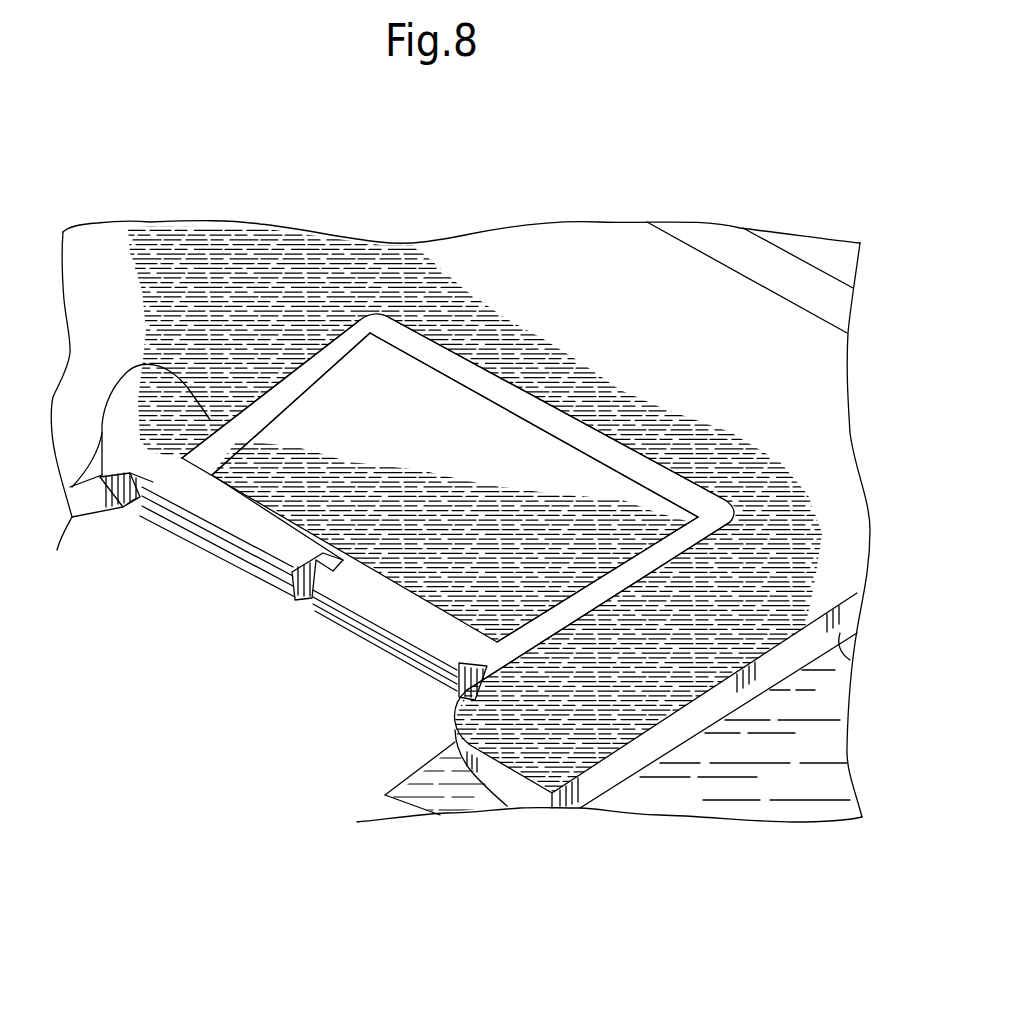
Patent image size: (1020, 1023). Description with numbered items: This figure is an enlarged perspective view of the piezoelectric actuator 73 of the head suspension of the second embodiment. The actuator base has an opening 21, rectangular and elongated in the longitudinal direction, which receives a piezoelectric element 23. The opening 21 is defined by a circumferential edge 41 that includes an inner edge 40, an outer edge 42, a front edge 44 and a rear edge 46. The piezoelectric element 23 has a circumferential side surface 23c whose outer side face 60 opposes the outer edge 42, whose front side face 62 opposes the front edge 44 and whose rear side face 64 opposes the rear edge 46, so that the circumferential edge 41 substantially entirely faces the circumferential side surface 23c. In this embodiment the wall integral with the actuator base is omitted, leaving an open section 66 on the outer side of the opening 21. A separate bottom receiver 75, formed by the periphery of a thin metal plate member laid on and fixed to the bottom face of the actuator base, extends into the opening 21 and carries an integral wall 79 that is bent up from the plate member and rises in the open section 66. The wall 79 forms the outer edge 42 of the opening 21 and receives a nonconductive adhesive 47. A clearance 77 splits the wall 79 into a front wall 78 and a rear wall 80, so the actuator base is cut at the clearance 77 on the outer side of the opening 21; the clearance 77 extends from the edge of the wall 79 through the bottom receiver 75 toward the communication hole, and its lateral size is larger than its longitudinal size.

The piezoelectric actuator 73 is at (561, 200).
The outer side face 60 is at (662, 490).
The circumferential side surface 23c is at (525, 416).
The circumferential edge 41 is at (487, 348).
The inner edge 40 is at (624, 448).
The rear edge 46 is at (313, 392).
The rear side face 64 is at (242, 414).
The piezoelectric element 23 is at (283, 438).
The front edge 44 is at (600, 578).
The front side face 62 is at (543, 620).
The open section 66 is at (430, 697).
The outer edge 42 is at (452, 642).
The opening 21 is at (107, 503).
The rear wall 80 is at (245, 535).
The bottom receiver 75 is at (270, 553).
The wall 79 is at (295, 600).
The clearance 77 is at (333, 593).
The front wall 78 is at (445, 632).
The nonconductive adhesive 47 is at (400, 605).